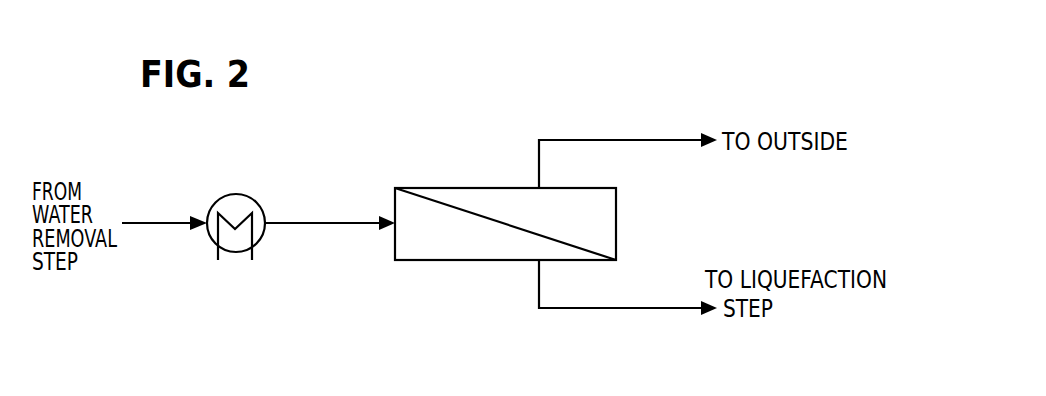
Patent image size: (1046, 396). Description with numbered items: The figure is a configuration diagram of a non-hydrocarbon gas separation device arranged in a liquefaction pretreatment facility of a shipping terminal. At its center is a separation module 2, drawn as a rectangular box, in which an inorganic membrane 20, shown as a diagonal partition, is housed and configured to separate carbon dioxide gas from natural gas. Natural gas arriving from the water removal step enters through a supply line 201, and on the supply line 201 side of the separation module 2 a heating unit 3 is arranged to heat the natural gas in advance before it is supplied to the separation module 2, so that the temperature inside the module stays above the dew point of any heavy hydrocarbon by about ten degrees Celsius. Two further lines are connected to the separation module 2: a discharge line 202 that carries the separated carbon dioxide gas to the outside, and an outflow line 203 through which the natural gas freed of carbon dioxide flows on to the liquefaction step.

The heating unit 3 is at (233, 196).
The supply line 201 is at (332, 205).
The separation module 2 is at (435, 188).
The inorganic membrane 20 is at (493, 218).
The discharge line 202 is at (635, 122).
The outflow line 203 is at (623, 310).